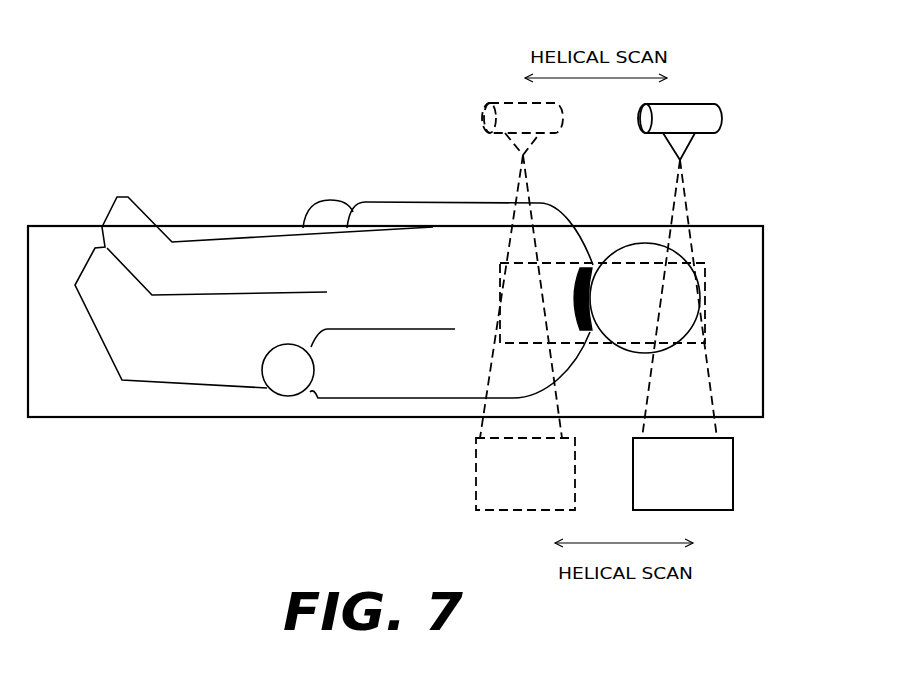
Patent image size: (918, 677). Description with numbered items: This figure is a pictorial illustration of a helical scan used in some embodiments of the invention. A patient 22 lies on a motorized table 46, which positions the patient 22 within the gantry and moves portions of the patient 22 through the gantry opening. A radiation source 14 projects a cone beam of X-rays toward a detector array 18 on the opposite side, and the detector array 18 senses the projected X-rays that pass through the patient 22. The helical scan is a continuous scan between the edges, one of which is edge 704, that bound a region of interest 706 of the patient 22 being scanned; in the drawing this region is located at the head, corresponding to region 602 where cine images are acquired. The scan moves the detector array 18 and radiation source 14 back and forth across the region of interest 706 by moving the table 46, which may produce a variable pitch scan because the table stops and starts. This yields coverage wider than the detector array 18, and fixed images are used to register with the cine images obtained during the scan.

The radiation source 14 is at (711, 90).
The detector array 18 is at (732, 520).
The patient 22 is at (334, 280).
The motorized table 46 is at (395, 280).
The region 602 is at (699, 268).
The edge 704 is at (530, 205).
The region of interest 706 is at (592, 356).